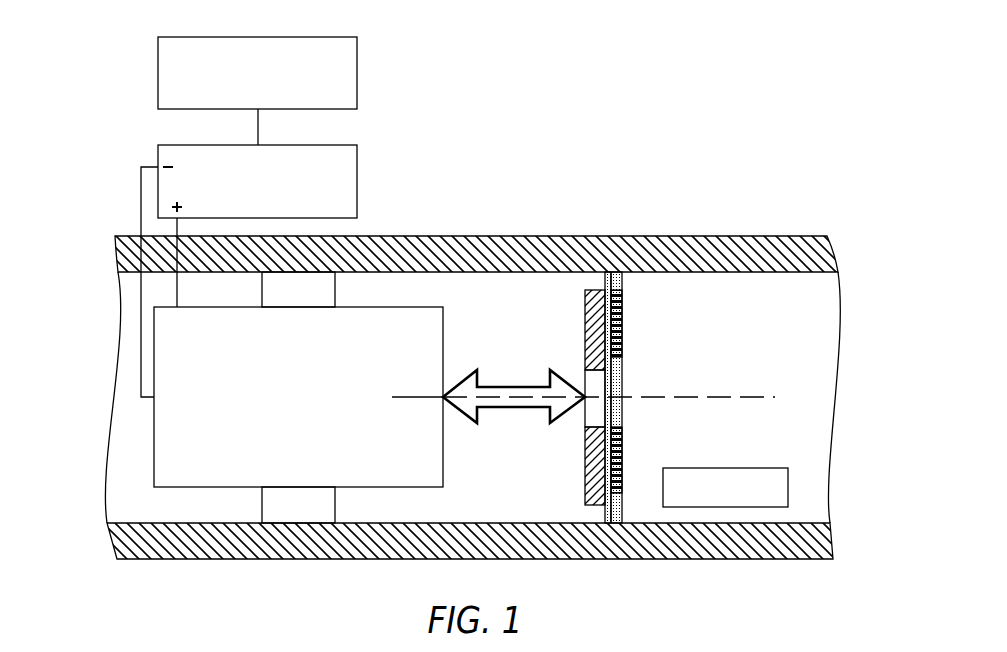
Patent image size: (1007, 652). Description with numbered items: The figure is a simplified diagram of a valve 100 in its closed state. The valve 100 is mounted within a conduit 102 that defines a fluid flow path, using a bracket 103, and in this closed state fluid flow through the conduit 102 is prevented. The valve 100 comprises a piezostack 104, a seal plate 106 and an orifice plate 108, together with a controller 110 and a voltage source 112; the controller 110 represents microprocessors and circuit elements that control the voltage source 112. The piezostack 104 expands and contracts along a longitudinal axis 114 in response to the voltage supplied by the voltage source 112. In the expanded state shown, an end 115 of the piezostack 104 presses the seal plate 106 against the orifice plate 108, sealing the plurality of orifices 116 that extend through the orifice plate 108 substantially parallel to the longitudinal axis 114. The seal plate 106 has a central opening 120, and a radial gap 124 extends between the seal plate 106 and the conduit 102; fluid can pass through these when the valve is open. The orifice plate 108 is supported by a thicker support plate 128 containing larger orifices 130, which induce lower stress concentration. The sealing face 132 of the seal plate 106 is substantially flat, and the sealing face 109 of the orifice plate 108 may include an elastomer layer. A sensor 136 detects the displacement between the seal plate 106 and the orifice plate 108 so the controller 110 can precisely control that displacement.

The valve 100 is at (734, 70).
The conduit 102 is at (756, 236).
The bracket 103 is at (280, 515).
The piezostack 104 is at (168, 442).
The seal plate 106 is at (586, 313).
The orifice plate 108 is at (604, 276).
The sealing face 109 is at (586, 487).
The controller 110 is at (358, 57).
The voltage source 112 is at (358, 165).
The longitudinal axis 114 is at (742, 397).
The end 115 is at (443, 461).
The orifices 116 is at (586, 333).
The central opening 120 is at (592, 415).
The radial gap 124 is at (590, 281).
The support plate 128 is at (625, 372).
The orifices 130 is at (634, 315).
The sealing face 132 is at (615, 428).
The sensor 136 is at (745, 468).